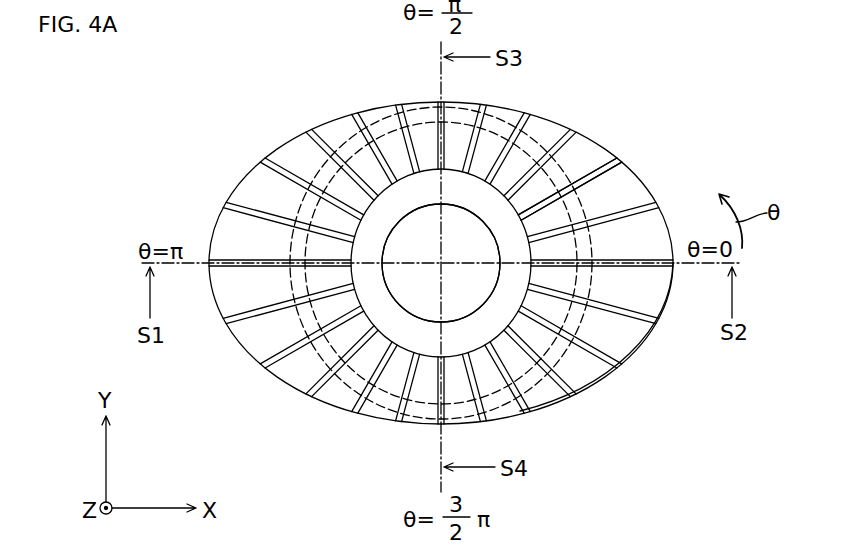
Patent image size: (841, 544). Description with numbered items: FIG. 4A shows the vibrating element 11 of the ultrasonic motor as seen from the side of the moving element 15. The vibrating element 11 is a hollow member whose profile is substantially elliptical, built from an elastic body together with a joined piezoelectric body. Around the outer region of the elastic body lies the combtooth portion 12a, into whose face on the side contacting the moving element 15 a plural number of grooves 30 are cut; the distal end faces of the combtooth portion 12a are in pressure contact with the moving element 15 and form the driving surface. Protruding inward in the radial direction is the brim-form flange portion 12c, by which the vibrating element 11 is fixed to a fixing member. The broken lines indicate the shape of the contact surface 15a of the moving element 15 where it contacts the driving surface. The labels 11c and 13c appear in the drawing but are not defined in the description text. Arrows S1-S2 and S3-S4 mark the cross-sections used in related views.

The vibrating element 11 is at (598, 81).
The tooth 11c is at (604, 198).
The tooth portion 13c is at (570, 189).
The combtooth portion 12a is at (296, 152).
The flange portion 12c is at (410, 189).
The moving element 15 is at (487, 247).
The contact surface 15a is at (441, 263).
The grooves 30 is at (565, 390).